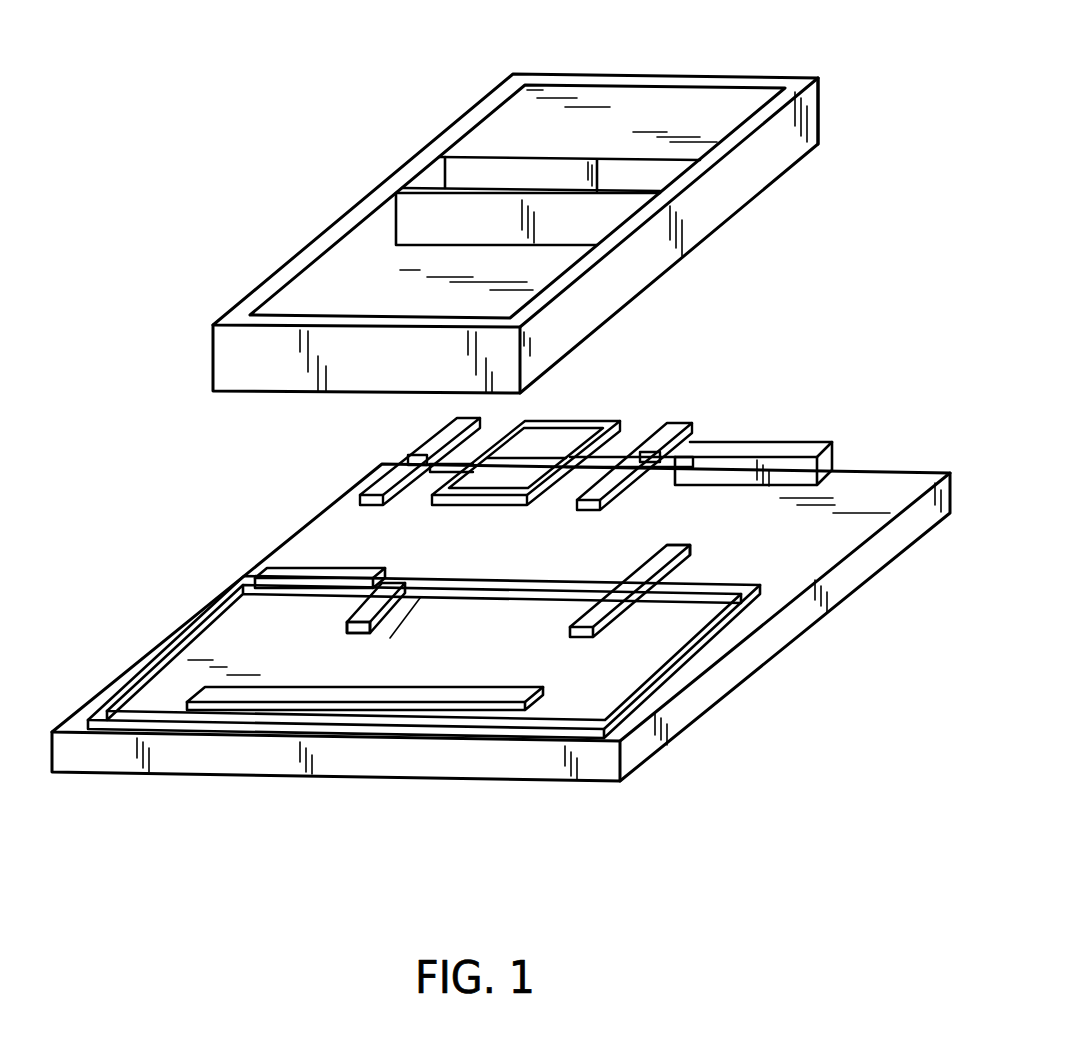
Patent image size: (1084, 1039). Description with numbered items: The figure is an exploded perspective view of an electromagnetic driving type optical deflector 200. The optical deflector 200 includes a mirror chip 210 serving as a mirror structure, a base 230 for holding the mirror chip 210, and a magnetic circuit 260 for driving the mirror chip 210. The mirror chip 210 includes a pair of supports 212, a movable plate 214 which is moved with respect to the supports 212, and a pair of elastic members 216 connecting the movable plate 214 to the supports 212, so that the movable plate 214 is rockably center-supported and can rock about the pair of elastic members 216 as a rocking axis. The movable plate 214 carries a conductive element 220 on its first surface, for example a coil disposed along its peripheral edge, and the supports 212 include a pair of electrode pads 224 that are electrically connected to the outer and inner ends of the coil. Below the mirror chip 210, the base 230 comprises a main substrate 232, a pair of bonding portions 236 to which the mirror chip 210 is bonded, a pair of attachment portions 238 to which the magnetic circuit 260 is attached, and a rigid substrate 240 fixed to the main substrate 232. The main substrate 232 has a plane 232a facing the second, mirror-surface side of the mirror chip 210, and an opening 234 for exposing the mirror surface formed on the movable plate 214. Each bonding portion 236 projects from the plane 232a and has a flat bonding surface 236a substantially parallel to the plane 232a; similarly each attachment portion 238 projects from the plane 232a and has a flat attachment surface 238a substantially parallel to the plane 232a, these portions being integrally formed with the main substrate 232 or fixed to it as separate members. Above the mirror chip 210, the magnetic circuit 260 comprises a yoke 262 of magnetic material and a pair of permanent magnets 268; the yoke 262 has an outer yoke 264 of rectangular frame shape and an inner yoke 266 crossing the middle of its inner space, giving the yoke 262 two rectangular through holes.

The optical deflector 200 is at (229, 180).
The mirror chip 210 is at (518, 437).
The supports 212 is at (440, 440).
The movable plate 214 is at (545, 443).
The elastic members 216 is at (440, 485).
The conductive element 220 is at (497, 487).
The electrode pads 224 is at (420, 462).
The base 230 is at (501, 599).
The main substrate 232 is at (685, 716).
The plane 232a is at (880, 480).
The opening 234 is at (497, 637).
The bonding portions 236 is at (353, 608).
The bonding surface 236a is at (405, 572).
The attachment portions 238 is at (383, 702).
The attachment surface 238a is at (292, 690).
The rigid substrate 240 is at (222, 727).
The magnetic circuit 260 is at (746, 70).
The yoke 262 is at (822, 112).
The outer yoke 264 is at (732, 152).
The inner yoke 266 is at (465, 193).
The permanent magnets 268 is at (626, 100).